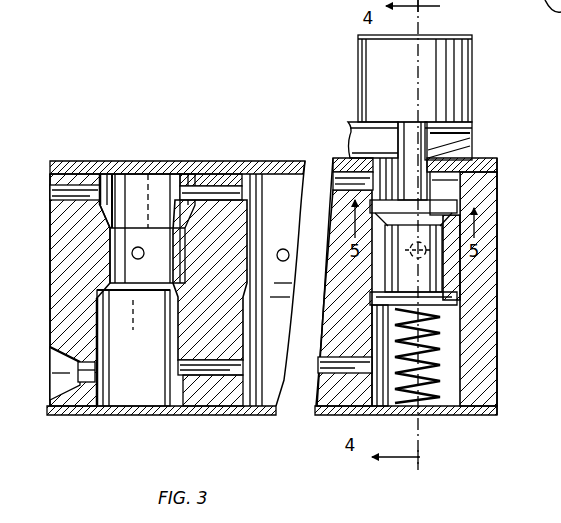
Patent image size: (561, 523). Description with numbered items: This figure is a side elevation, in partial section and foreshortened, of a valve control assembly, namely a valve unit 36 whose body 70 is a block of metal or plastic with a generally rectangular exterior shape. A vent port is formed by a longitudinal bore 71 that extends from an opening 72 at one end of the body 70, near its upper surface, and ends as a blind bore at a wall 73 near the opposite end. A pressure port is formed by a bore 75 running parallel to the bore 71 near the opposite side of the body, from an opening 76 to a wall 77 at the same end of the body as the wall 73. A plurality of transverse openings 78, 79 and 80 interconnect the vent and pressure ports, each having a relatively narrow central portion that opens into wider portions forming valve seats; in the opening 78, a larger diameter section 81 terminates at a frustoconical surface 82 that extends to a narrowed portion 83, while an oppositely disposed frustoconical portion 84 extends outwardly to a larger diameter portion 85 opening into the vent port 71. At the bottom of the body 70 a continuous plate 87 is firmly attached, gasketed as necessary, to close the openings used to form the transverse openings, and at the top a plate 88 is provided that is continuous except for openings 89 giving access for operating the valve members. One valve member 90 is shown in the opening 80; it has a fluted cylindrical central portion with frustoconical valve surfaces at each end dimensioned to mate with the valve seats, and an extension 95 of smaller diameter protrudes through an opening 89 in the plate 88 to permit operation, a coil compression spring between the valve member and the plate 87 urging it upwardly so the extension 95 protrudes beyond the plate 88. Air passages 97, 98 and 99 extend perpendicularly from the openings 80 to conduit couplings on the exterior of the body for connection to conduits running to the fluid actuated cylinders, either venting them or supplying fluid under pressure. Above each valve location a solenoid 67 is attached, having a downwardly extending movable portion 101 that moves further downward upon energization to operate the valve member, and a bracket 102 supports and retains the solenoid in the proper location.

The valve unit 36 is at (256, 166).
The solenoid 67 is at (474, 70).
The body 70 is at (218, 415).
The longitudinal bore 71 is at (218, 186).
The opening 72 is at (50, 200).
The wall 73 is at (457, 187).
The bore 75 is at (178, 375).
The opening 76 is at (50, 378).
The wall 77 is at (450, 375).
The transverse opening 78 is at (150, 170).
The transverse opening 79 is at (262, 248).
The transverse opening 80 is at (458, 280).
The larger diameter section 81 is at (100, 352).
The frustoconical surface 82 is at (164, 285).
The narrowed portion 83 is at (132, 305).
The frustoconical portion 84 is at (118, 172).
The larger diameter portion 85 is at (104, 172).
The plate 87 is at (92, 416).
The plate 88 is at (200, 172).
The openings 89 is at (136, 172).
The valve member 90 is at (450, 308).
The extension 95 is at (474, 145).
The air passage 97 is at (131, 255).
The air passage 98 is at (272, 297).
The air passage 99 is at (480, 235).
The movable portion 101 is at (470, 134).
The bracket 102 is at (350, 124).